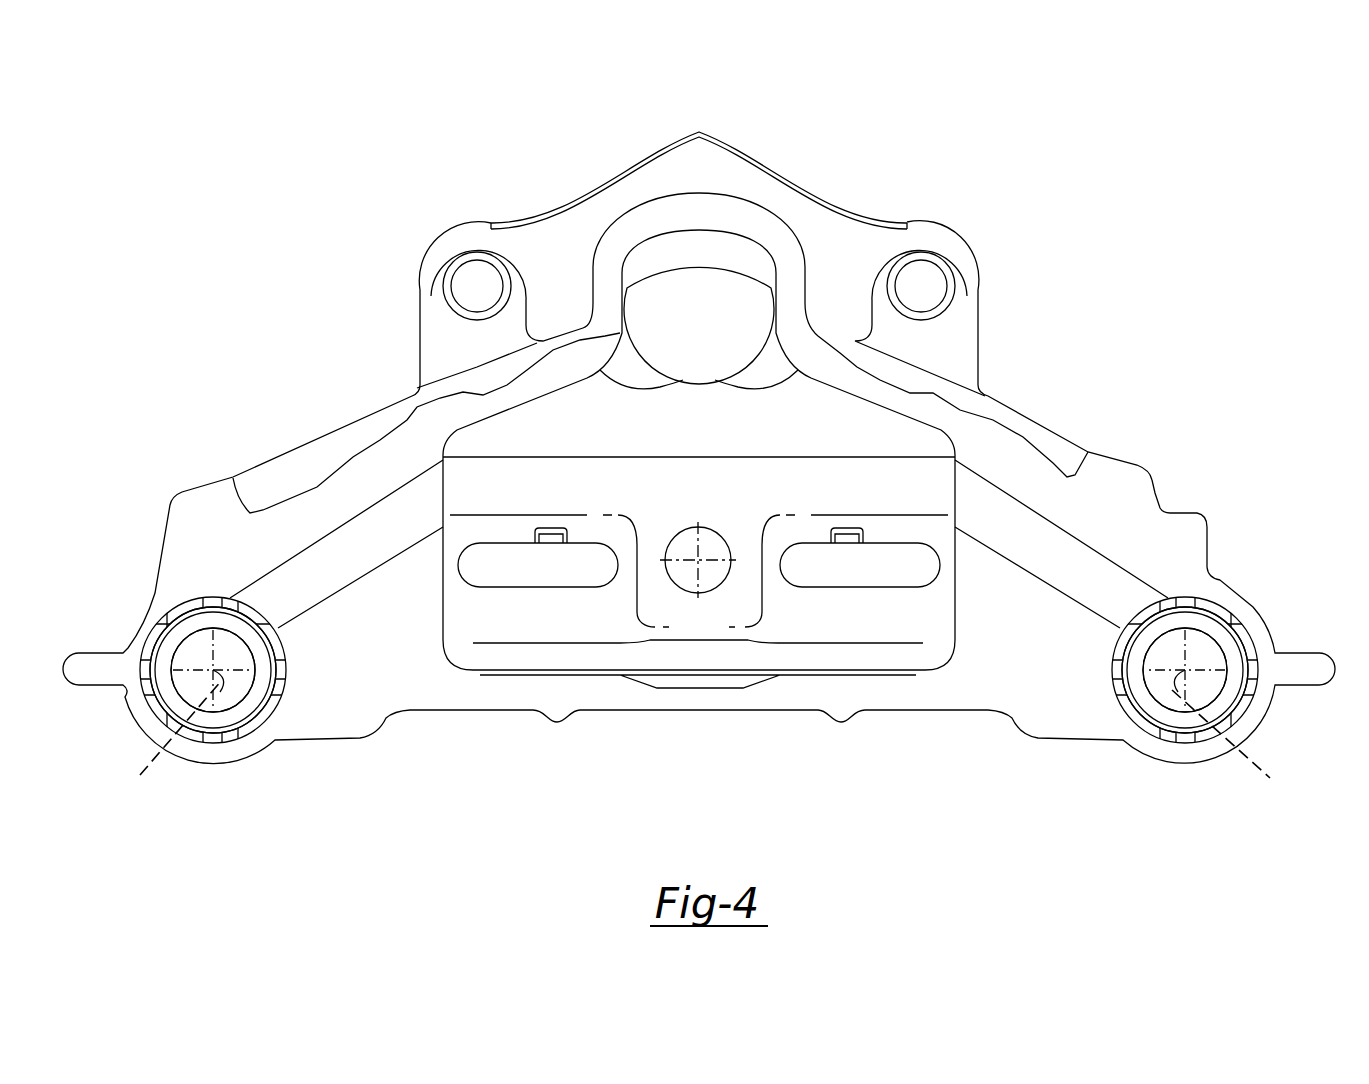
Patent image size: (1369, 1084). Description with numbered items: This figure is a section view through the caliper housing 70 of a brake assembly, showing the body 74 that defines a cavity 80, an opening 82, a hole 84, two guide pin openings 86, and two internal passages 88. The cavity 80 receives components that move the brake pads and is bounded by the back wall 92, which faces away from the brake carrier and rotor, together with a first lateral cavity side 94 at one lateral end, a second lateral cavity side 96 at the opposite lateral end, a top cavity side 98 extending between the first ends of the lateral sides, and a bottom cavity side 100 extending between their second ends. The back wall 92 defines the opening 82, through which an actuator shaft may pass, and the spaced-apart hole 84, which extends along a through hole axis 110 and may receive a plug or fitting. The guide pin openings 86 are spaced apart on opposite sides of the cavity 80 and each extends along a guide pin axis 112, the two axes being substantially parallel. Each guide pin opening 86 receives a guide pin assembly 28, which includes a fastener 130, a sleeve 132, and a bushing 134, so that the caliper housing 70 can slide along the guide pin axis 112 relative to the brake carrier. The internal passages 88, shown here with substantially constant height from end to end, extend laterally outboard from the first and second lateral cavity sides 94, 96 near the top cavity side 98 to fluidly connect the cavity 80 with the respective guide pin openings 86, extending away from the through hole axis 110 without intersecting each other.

The caliper housing 70 is at (710, 131).
The body 74 is at (1141, 465).
The opening 82 is at (708, 300).
The top cavity side 98 is at (699, 380).
The cavity 80 is at (708, 449).
The back wall 92 is at (817, 427).
The hole 84 is at (706, 527).
The through hole axis 110 is at (698, 562).
The first lateral cavity side 94 is at (450, 590).
The second lateral cavity side 96 is at (948, 590).
The bottom cavity side 100 is at (548, 666).
The internal passage 88 is at (334, 585).
The guide pin assembly 28 is at (200, 591).
The guide pin opening 86 is at (156, 613).
The bushing 134 is at (150, 697).
The sleeve 132 is at (220, 723).
The fastener 130 is at (240, 690).
The guide pin axis 112 is at (704, 744).